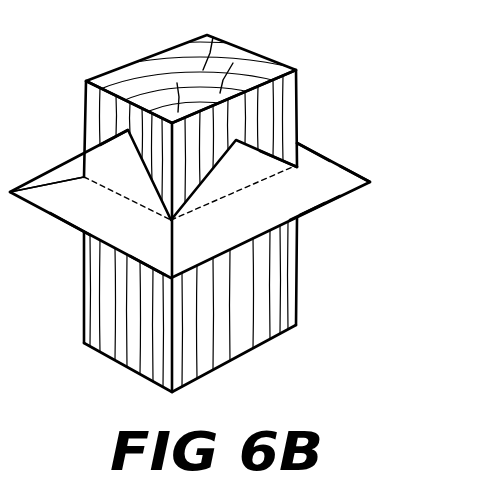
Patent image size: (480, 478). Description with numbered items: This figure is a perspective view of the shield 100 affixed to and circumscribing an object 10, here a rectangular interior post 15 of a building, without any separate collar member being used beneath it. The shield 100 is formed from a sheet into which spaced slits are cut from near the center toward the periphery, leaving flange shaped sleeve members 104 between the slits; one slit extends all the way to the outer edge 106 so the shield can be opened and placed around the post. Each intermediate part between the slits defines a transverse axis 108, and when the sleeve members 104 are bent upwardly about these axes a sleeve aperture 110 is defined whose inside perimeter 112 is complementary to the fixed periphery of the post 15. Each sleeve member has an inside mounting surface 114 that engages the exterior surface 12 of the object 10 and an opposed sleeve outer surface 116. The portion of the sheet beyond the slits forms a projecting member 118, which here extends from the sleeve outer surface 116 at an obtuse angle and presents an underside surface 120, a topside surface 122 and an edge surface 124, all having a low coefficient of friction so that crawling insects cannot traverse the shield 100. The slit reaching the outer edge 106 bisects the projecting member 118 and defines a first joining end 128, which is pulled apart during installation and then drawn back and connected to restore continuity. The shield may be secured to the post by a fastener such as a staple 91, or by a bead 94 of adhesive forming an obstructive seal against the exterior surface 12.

The object 10 is at (282, 310).
The exterior surface 12 is at (187, 353).
The interior post 15 is at (233, 332).
The staple 91 is at (125, 158).
The bead of adhesive 94 is at (271, 179).
The shield 100 is at (343, 169).
The sleeve members 104 is at (298, 146).
The outer edge 106 is at (72, 235).
The transverse axis 108 is at (90, 187).
The sleeve aperture 110 is at (107, 172).
The inside perimeter 112 is at (300, 160).
The inside mounting surface 114 is at (142, 117).
The sleeve outer surface 116 is at (115, 185).
The projecting member 118 is at (342, 171).
The underside surface 120 is at (302, 217).
The topside surface 122 is at (328, 187).
The edge surface 124 is at (312, 215).
The first joining end 128 is at (153, 253).